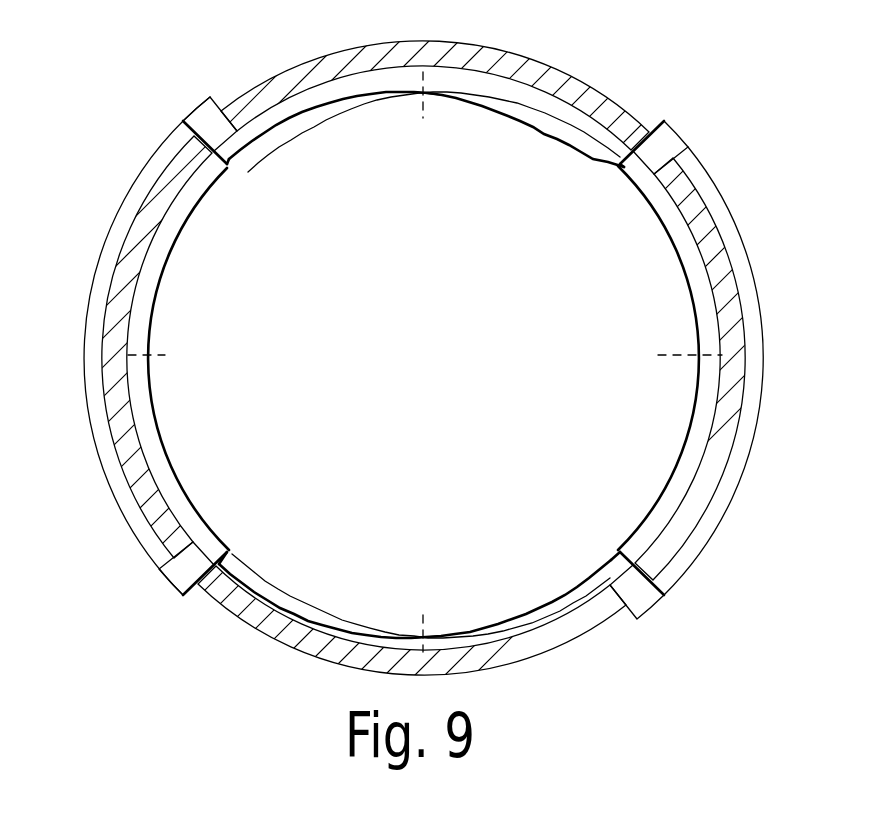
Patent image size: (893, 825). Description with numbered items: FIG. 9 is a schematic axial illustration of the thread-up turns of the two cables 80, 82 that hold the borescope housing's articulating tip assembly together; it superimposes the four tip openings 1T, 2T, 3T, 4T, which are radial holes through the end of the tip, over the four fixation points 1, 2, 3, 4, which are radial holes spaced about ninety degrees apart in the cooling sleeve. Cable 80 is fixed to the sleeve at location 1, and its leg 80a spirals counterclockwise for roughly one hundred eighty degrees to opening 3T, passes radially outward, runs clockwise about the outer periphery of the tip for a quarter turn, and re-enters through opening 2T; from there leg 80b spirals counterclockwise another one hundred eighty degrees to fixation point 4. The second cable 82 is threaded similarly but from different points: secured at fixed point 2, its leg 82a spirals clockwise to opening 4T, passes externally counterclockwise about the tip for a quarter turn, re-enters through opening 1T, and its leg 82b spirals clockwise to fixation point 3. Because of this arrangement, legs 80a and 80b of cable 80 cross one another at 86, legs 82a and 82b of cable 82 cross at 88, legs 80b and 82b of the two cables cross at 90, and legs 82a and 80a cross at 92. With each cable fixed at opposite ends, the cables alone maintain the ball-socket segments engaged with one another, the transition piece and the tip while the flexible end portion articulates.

The radial hole 1 is at (193, 594).
The radial hole 2 is at (648, 599).
The radial hole 3 is at (654, 130).
The radial hole 4 is at (196, 122).
The tip opening 1T is at (247, 538).
The tip opening 2T is at (596, 536).
The tip opening 3T is at (603, 195).
The tip opening 4T is at (245, 193).
The cable 80 is at (240, 614).
The leg of cable 80 80a is at (652, 198).
The leg of cable 80 80b is at (336, 100).
The cable 82 is at (96, 494).
The leg of cable 82 82a is at (203, 200).
The leg of cable 82 82b is at (312, 128).
The crossing point 86 is at (668, 357).
The crossing point 88 is at (157, 355).
The crossing point 90 is at (425, 111).
The crossing point 92 is at (423, 616).